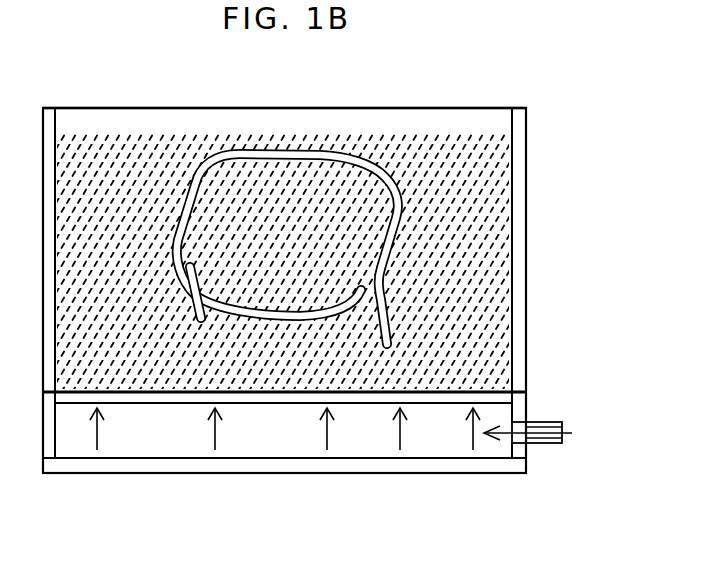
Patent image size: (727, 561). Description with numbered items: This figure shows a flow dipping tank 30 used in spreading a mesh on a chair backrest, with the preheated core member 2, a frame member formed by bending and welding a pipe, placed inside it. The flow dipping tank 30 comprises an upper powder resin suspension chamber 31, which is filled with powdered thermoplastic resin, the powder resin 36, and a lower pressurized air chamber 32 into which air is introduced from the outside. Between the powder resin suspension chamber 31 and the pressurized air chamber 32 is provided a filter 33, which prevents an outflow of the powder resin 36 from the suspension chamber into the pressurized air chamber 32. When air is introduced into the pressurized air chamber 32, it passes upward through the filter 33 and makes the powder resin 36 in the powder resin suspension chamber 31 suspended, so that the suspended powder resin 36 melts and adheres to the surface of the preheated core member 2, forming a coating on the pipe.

The core member 2 is at (401, 227).
The flow dipping tank 30 is at (527, 135).
The powder resin suspension chamber 31 is at (386, 122).
The pressurized air chamber 32 is at (147, 440).
The filter 33 is at (514, 398).
The powder resin 36 is at (442, 154).